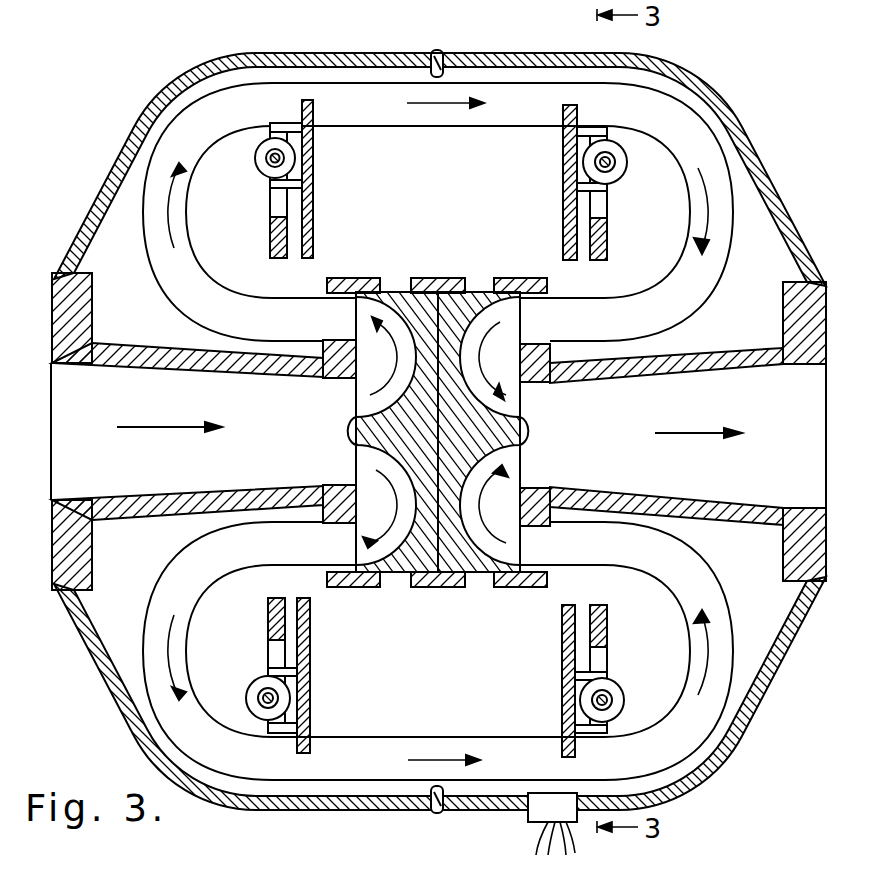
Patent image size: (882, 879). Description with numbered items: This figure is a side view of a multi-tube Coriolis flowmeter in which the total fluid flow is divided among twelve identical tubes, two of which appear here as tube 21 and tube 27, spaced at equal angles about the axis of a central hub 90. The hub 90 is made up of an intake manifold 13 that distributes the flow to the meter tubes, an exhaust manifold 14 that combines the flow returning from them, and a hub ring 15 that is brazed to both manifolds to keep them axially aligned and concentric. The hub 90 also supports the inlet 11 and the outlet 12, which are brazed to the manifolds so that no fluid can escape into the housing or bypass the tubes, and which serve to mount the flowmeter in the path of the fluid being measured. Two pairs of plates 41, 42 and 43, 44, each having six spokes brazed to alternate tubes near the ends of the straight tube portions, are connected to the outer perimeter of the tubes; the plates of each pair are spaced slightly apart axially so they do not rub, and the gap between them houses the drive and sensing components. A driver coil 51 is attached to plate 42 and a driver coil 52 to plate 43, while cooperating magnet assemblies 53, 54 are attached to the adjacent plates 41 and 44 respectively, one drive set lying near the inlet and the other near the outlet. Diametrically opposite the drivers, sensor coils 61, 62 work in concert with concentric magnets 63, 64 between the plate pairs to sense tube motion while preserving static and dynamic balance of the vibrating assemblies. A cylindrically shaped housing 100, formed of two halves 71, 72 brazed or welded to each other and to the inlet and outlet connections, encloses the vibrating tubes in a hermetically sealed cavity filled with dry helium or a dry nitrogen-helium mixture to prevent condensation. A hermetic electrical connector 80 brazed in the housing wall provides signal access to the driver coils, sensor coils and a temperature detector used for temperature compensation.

The housing 100 is at (494, 53).
The inlet 11 is at (52, 292).
The outlet 12 is at (820, 292).
The intake manifold 13 is at (379, 283).
The exhaust manifold 14 is at (479, 280).
The hub ring 15 is at (439, 278).
The tube 21 is at (296, 82).
The tube 27 is at (494, 748).
The plate 41 is at (270, 236).
The plate 42 is at (315, 162).
The plate 43 is at (563, 149).
The plate 44 is at (607, 237).
The driver coil 51 is at (257, 184).
The driver coil 52 is at (618, 147).
The magnet assembly 53 is at (258, 158).
The magnet assembly 54 is at (617, 166).
The sensor coil 61 is at (252, 673).
The sensor coil 62 is at (623, 693).
The magnet 63 is at (250, 698).
The magnet 64 is at (608, 683).
The housing half 71 is at (284, 53).
The housing half 72 is at (689, 82).
The hermetic electrical connector 80 is at (527, 813).
The hub 90 is at (430, 588).